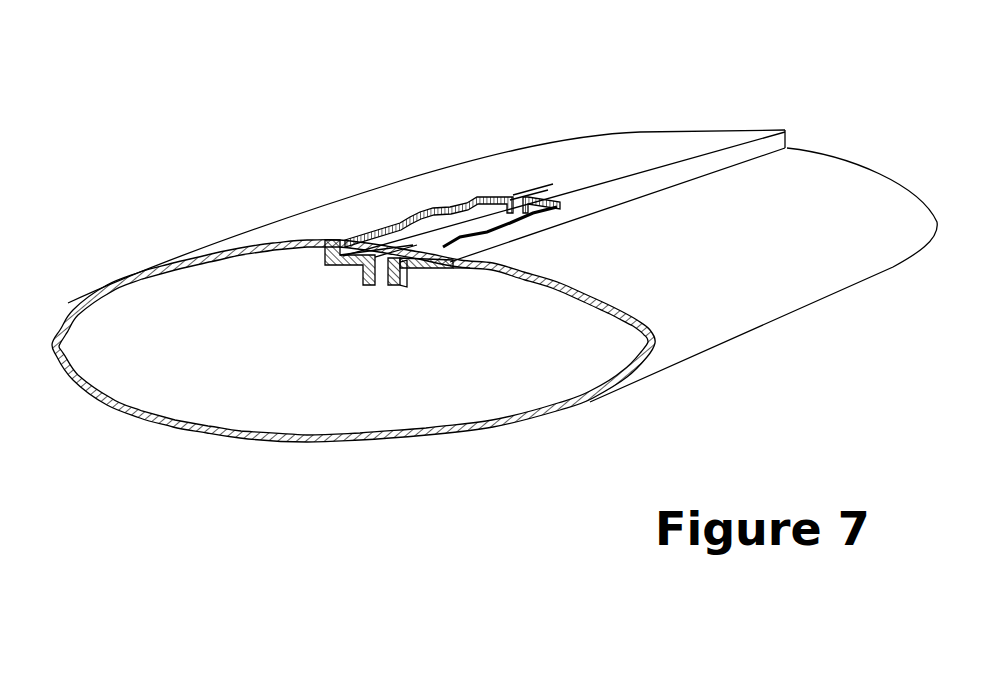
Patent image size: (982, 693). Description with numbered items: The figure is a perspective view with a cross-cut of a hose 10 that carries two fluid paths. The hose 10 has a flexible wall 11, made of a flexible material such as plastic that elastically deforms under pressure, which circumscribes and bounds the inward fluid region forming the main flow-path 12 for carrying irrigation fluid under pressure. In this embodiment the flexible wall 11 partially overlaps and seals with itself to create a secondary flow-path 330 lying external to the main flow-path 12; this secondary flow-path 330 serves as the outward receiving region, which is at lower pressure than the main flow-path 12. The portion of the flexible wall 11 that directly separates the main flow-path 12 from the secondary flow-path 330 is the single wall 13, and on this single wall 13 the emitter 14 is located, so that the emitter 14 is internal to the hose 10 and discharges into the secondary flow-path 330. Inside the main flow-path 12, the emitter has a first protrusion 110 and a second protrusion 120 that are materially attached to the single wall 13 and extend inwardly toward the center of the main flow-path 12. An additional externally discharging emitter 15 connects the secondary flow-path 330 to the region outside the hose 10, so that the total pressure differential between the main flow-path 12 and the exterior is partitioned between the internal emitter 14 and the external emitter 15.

The hose 10 is at (428, 133).
The flexible wall 11 is at (122, 410).
The main flow-path 12 is at (249, 353).
The single wall 13 is at (423, 267).
The emitter 14 is at (377, 320).
The externally discharging emitter 15 is at (530, 182).
The first protrusion 110 is at (368, 288).
The second protrusion 120 is at (392, 290).
The secondary flow-path 330 is at (440, 217).